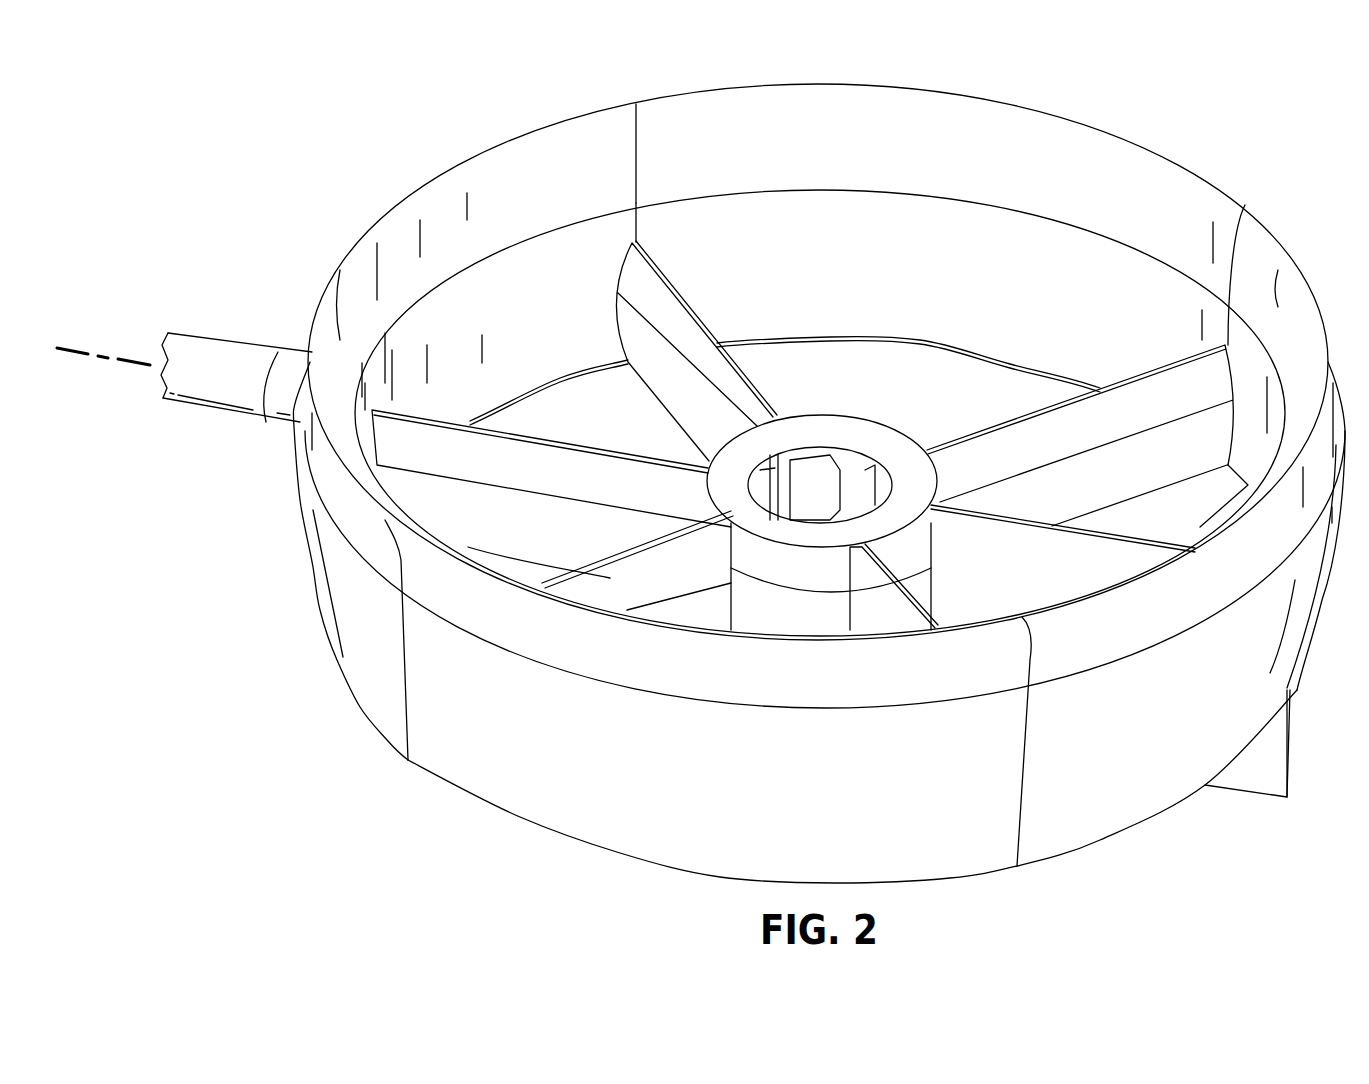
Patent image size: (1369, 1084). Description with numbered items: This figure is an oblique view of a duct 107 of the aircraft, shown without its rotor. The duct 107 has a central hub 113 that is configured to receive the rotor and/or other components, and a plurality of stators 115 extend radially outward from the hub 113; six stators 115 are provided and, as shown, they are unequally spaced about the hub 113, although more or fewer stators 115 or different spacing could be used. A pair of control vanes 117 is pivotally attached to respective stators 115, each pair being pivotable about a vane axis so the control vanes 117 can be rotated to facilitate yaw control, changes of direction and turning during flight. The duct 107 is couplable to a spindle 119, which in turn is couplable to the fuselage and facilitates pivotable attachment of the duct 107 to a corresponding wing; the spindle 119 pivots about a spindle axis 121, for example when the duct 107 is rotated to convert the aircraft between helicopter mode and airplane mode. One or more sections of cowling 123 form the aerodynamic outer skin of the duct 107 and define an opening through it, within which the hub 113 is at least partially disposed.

The duct 107 is at (1167, 116).
The central hub 113 is at (879, 424).
The stators 115 is at (662, 385).
The control vanes 117 is at (502, 600).
The spindle 119 is at (217, 335).
The spindle axis 121 is at (78, 352).
The cowling 123 is at (514, 157).